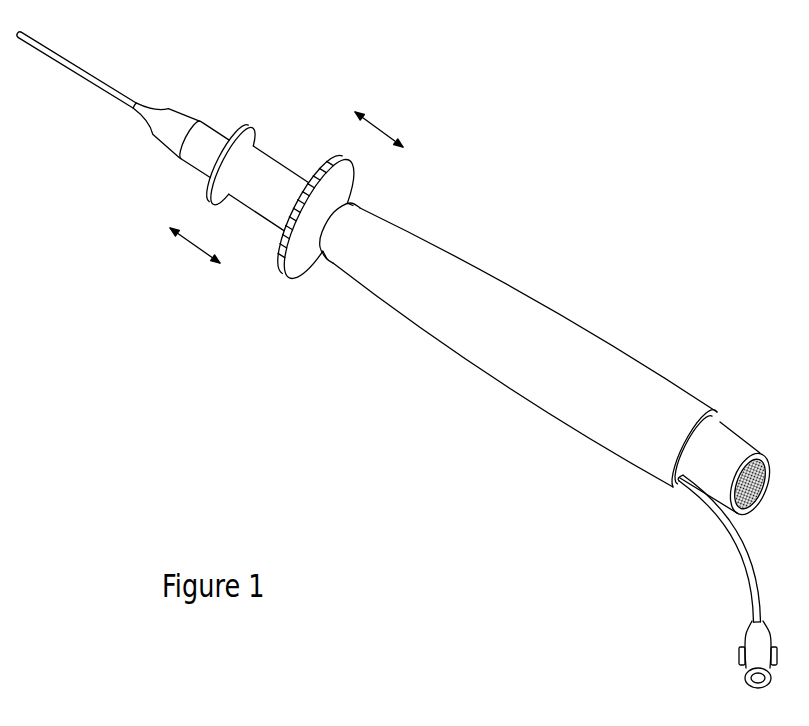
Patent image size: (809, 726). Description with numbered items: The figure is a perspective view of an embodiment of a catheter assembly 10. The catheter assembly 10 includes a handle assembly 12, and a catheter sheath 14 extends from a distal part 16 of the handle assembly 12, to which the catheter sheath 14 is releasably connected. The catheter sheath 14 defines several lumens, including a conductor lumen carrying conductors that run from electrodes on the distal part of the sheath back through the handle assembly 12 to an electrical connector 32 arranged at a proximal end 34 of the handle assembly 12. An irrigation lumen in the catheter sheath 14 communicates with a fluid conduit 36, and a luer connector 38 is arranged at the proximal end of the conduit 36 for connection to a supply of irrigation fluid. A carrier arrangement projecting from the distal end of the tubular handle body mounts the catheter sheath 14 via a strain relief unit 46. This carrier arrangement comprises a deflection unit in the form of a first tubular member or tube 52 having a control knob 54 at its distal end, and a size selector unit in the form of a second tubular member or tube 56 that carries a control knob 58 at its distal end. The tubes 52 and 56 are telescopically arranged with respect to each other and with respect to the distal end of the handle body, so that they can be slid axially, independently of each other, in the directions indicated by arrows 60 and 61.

The catheter assembly 10 is at (518, 122).
The handle assembly 12 is at (498, 277).
The catheter sheath 14 is at (90, 72).
The distal part 16 is at (198, 92).
The electrical connector 32 is at (742, 445).
The proximal end 34 is at (677, 492).
The fluid conduit 36 is at (732, 535).
The luer connector 38 is at (750, 635).
The strain relief unit 46 is at (172, 107).
The first tubular member 52 is at (325, 253).
The control knob 54 is at (283, 268).
The second tubular member 56 is at (247, 200).
The control knob 58 is at (257, 130).
The arrow 60 is at (187, 250).
The arrow 61 is at (382, 120).